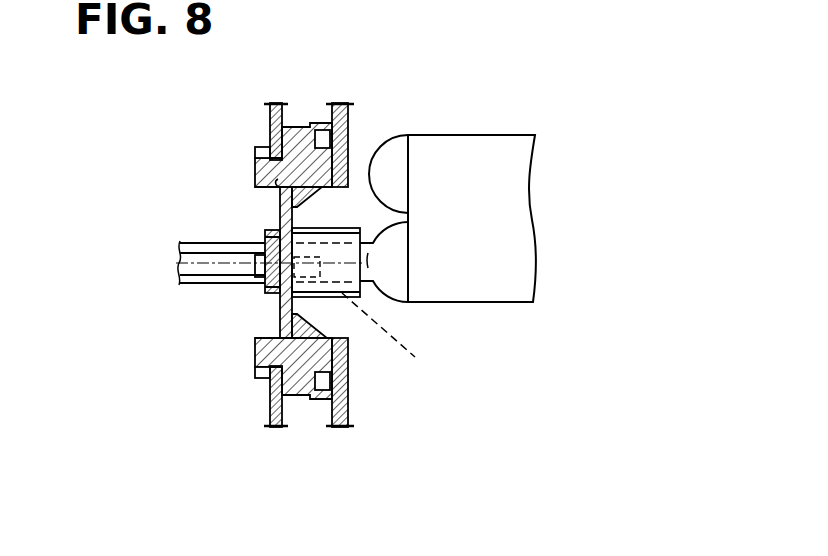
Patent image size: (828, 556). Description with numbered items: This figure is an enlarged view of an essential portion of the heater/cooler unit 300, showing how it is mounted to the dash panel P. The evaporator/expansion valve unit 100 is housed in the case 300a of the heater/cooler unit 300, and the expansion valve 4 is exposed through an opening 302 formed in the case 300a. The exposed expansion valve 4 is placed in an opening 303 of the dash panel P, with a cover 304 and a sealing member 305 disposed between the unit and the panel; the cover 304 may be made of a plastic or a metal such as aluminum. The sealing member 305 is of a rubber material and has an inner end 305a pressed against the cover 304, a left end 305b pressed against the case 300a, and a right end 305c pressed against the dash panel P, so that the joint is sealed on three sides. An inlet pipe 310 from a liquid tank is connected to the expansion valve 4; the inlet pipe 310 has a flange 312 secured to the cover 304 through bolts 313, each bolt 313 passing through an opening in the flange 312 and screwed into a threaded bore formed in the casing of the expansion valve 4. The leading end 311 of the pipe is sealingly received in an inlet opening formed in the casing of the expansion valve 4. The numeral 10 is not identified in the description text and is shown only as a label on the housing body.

The heater/cooler unit 300 is at (690, 68).
The case 300a is at (350, 407).
The opening 302 is at (345, 335).
The opening 303 is at (305, 408).
The cover 304 is at (278, 318).
The sealing member 305 is at (303, 112).
The inner end 305a is at (280, 196).
The left end 305b is at (345, 143).
The right end 305c is at (270, 130).
The inlet pipe 310 is at (178, 267).
The leading end 311 is at (407, 334).
The flange 312 is at (270, 233).
The bolt 313 is at (257, 265).
The expansion valve 4 is at (320, 262).
The housing bottom 10 is at (485, 302).
The evaporator/expansion valve unit 100 is at (467, 201).
The dash panel P is at (265, 408).